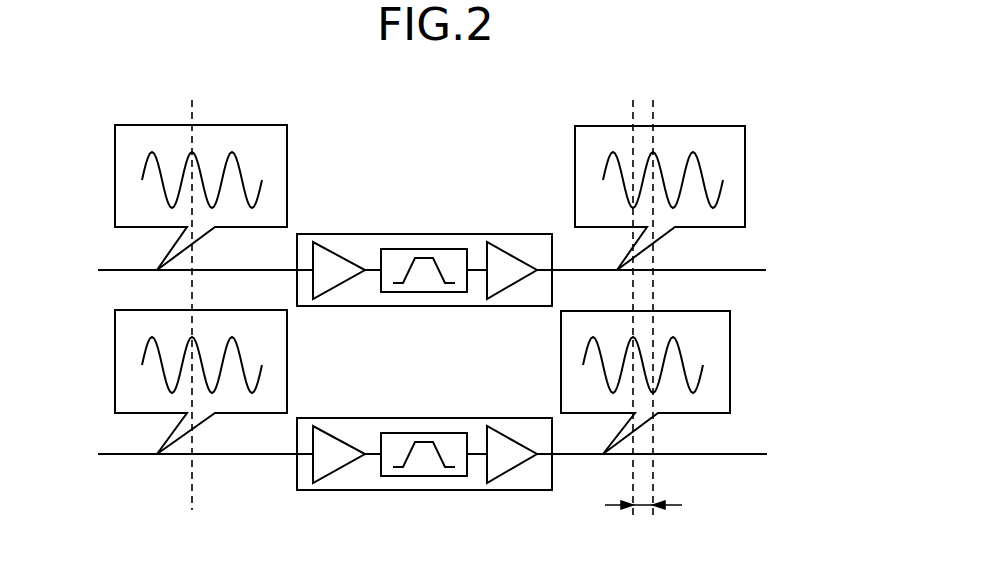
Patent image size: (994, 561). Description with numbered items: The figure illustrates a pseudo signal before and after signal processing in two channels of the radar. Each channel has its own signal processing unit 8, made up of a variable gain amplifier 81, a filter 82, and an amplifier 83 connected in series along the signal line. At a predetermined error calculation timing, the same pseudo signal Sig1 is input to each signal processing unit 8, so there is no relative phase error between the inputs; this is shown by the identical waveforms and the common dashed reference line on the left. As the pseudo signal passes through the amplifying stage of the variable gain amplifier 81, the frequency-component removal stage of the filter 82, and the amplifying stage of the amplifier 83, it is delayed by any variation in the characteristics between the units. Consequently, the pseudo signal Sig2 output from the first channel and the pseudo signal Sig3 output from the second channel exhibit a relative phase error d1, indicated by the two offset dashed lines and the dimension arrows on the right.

The signal processing unit 8 is at (488, 234).
The variable gain amplifier 81 is at (333, 291).
The filter 82 is at (420, 293).
The amplifier 83 is at (507, 290).
The pseudo signal Sig1 is at (144, 163).
The pseudo signal Sig2 is at (698, 162).
The pseudo signal Sig3 is at (680, 348).
The relative phase error d1 is at (643, 505).